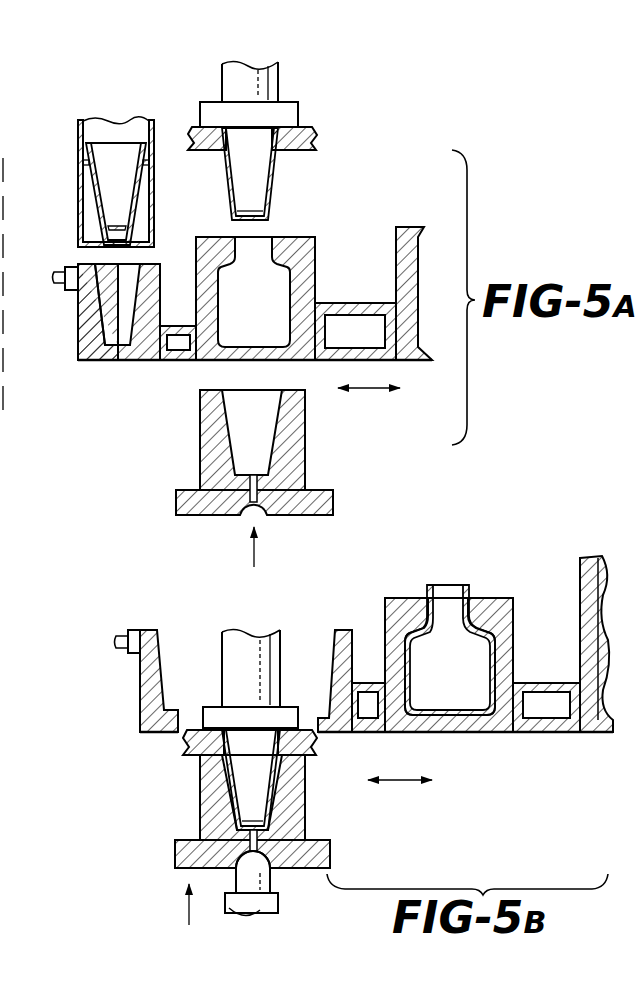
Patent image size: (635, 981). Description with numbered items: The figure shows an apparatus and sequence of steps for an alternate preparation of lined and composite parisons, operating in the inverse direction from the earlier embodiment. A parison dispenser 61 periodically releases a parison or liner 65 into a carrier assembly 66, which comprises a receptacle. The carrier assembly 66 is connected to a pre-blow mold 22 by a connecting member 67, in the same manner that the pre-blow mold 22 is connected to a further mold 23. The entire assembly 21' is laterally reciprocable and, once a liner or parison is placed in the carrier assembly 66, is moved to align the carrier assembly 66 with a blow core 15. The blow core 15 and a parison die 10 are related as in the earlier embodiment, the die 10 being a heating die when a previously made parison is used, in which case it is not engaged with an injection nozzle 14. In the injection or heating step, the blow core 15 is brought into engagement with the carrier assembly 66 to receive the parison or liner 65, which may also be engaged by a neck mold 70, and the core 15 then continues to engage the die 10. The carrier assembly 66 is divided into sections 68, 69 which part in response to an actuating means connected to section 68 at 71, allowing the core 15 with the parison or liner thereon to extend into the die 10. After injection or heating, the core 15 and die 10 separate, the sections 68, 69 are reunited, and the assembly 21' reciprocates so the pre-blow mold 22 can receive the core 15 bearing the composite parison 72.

In FIG. 5A, the parison die 10 is at (323, 507).
In FIG. 5B, the parison die 10 is at (303, 828).
In FIG. 5B, the injection nozzle 14 is at (278, 905).
In FIG. 5A, the blow core 15 is at (273, 94).
In FIG. 5B, the blow core 15 is at (223, 682).
In FIG. 5A, the assembly 21' is at (237, 294).
In FIG. 5B, the assembly 21' is at (329, 642).
In FIG. 5A, the pre-blow mold 22 is at (298, 364).
In FIG. 5B, the pre-blow mold 22 is at (433, 734).
In FIG. 5A, the mold 23 is at (414, 364).
In FIG. 5B, the mold 23 is at (592, 736).
In FIG. 5A, the parison dispenser 61 is at (152, 128).
In FIG. 5A, the parison or liner 65 is at (95, 192).
In FIG. 5A, the carrier assembly 66 is at (75, 355).
In FIG. 5B, the carrier assembly 66 is at (135, 712).
In FIG. 5A, the connecting member 67 is at (178, 362).
In FIG. 5B, the connecting member 67 is at (368, 707).
In FIG. 5A, the section of carrier assembly 68 is at (95, 355).
In FIG. 5B, the section of carrier assembly 68 is at (160, 718).
In FIG. 5A, the section of carrier assembly 69 is at (150, 353).
In FIG. 5B, the section of carrier assembly 69 is at (332, 720).
In FIG. 5A, the neck mold 70 is at (313, 146).
In FIG. 5B, the neck mold 70 is at (310, 753).
In FIG. 5A, the actuating means connection 71 is at (67, 292).
In FIG. 5B, the actuating means connection 71 is at (137, 630).
In FIG. 5A, the composite parison 72 is at (272, 203).